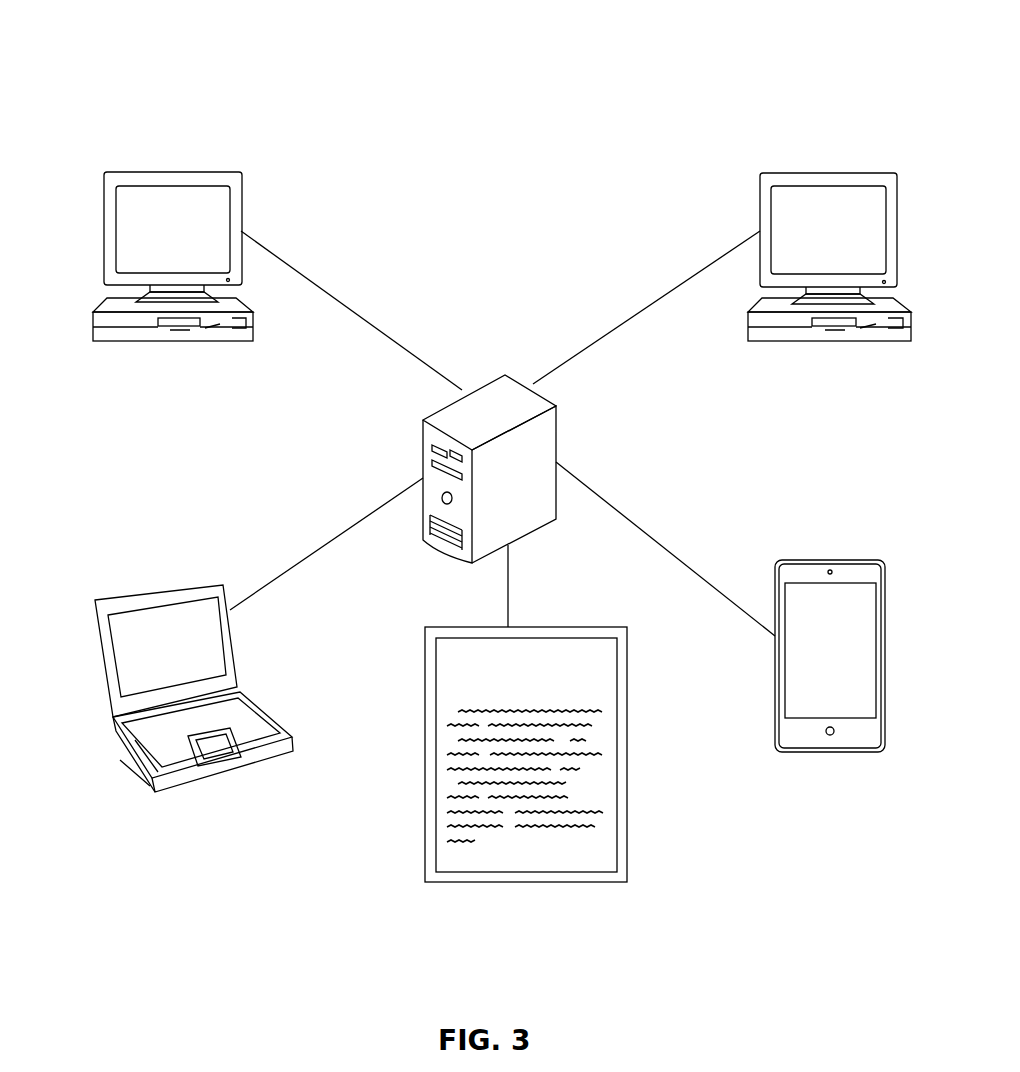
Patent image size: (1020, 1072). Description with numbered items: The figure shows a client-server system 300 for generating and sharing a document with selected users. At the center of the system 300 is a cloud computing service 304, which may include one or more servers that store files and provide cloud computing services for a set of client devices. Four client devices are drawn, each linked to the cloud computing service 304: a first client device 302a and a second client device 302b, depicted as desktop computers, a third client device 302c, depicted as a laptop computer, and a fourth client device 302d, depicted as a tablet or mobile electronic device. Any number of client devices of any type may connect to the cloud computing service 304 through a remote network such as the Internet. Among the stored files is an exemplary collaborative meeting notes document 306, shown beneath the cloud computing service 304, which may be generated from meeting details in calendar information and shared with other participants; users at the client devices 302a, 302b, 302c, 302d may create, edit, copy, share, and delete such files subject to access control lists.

The client-server system 300 is at (128, 52).
The client device 302a is at (178, 172).
The client device 302b is at (828, 173).
The client device 302c is at (200, 584).
The client device 302d is at (825, 560).
The cloud computing service 304 is at (494, 378).
The collaborative meeting notes document 306 is at (415, 628).